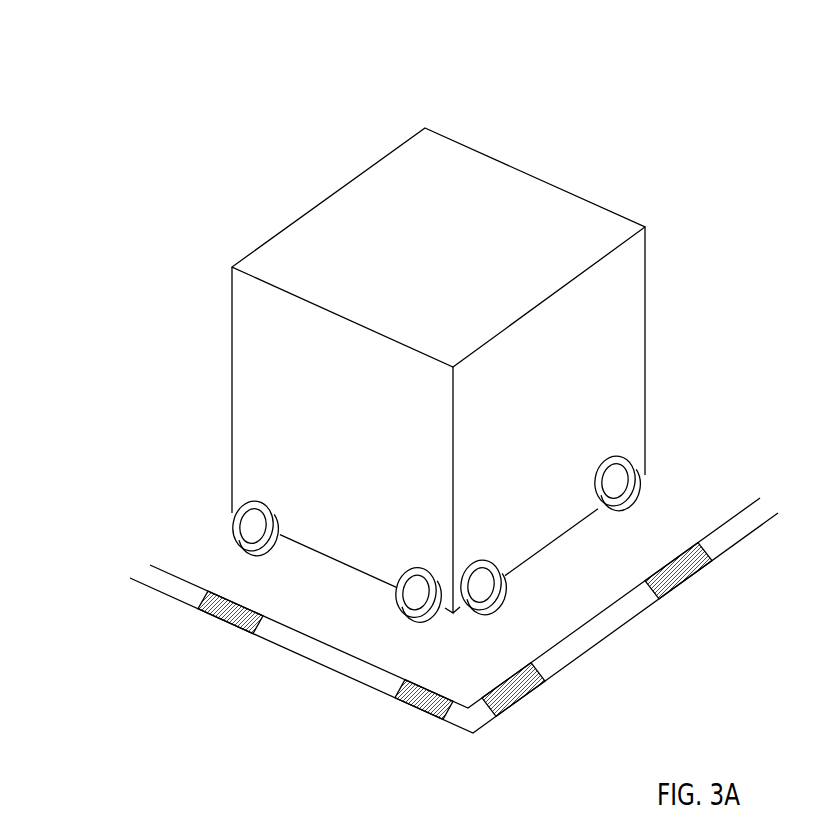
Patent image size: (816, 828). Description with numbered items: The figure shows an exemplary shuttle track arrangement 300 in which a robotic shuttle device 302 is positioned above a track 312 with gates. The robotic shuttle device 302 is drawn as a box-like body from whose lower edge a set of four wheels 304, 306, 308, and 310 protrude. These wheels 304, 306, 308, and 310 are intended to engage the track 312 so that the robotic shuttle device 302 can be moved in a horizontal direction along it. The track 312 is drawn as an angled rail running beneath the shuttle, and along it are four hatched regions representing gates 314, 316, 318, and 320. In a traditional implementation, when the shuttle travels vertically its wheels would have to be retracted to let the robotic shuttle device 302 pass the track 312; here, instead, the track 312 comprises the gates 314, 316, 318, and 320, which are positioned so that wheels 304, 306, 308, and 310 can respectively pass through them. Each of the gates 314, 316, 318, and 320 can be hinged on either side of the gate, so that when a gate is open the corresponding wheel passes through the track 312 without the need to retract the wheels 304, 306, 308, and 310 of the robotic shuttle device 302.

The robotic vehicle system 300 is at (114, 91).
The robotic shuttle device 302 is at (344, 207).
The wheel 304 is at (268, 498).
The wheel 306 is at (422, 567).
The wheel 308 is at (480, 558).
The wheel 310 is at (613, 455).
The track 312 is at (320, 665).
The gate 314 is at (220, 618).
The gate 316 is at (420, 712).
The gate 318 is at (520, 703).
The gate 320 is at (693, 580).